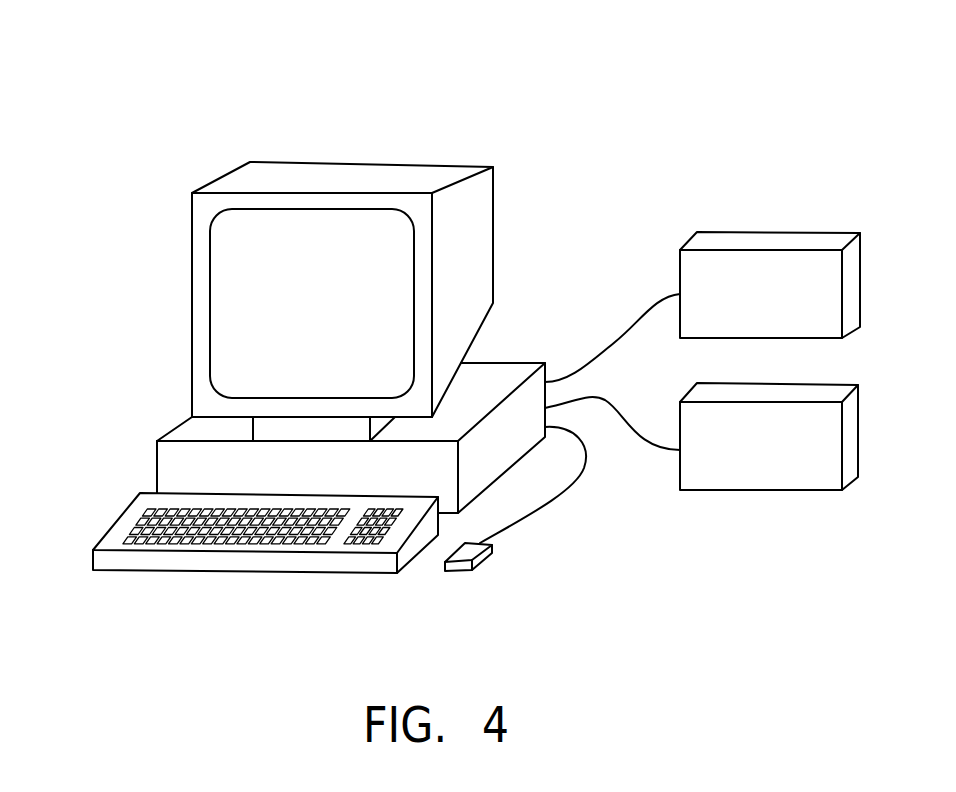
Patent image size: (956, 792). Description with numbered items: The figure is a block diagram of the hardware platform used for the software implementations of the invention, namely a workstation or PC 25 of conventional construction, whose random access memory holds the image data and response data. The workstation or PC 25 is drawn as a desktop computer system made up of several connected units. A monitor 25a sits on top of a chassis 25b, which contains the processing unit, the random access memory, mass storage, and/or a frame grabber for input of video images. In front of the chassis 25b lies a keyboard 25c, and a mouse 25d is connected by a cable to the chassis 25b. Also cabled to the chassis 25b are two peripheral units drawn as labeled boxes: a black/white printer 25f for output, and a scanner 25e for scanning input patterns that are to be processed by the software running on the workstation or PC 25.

The workstation or PC 25 is at (563, 140).
The monitor 25a is at (192, 282).
The chassis 25b is at (157, 468).
The keyboard 25c is at (107, 532).
The mouse 25d is at (478, 555).
The scanner 25e is at (778, 491).
The black/white printer 25f is at (777, 241).